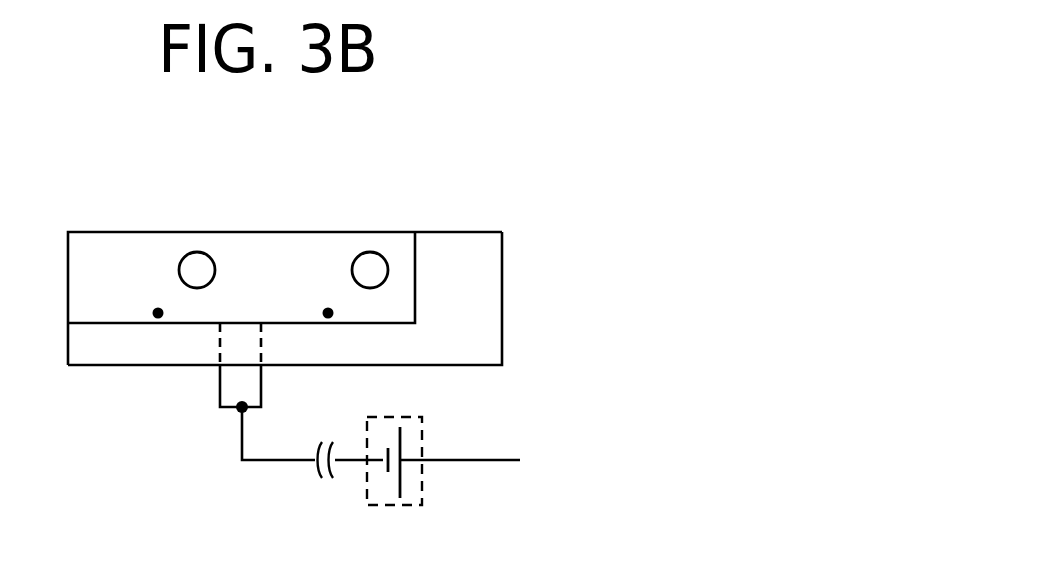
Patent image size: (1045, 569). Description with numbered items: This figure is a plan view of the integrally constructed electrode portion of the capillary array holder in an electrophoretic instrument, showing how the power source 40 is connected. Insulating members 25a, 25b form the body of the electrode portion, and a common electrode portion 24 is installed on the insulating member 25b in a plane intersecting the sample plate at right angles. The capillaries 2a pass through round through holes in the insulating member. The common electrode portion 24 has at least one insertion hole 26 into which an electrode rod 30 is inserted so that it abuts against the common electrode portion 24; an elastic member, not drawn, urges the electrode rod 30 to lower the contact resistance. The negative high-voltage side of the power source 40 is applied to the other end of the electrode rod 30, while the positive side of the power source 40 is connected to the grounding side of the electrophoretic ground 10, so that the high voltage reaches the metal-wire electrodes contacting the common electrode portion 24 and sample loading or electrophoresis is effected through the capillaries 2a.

The capillary 2a is at (383, 257).
The electrophoretic ground 10 is at (579, 445).
The common electrode portion 24 is at (137, 312).
The insulating member 25a is at (107, 232).
The insulating member 25b is at (478, 283).
The insertion hole 26 is at (243, 323).
The electrode rod 30 is at (230, 380).
The power source 40 is at (422, 478).